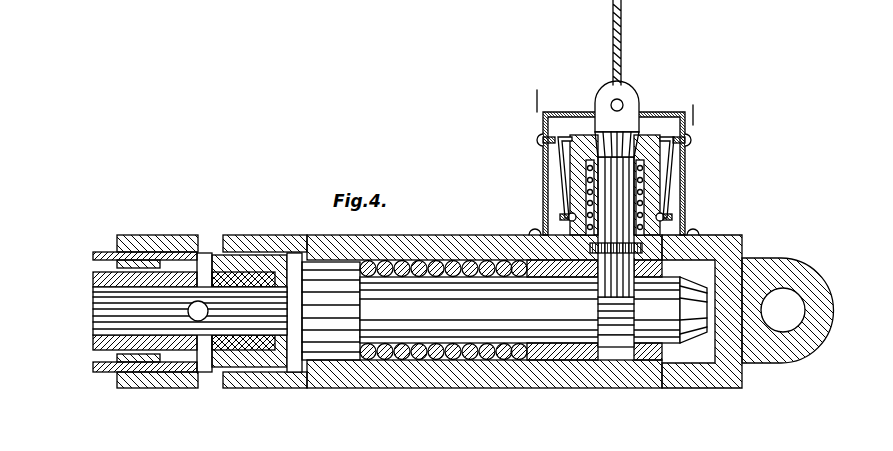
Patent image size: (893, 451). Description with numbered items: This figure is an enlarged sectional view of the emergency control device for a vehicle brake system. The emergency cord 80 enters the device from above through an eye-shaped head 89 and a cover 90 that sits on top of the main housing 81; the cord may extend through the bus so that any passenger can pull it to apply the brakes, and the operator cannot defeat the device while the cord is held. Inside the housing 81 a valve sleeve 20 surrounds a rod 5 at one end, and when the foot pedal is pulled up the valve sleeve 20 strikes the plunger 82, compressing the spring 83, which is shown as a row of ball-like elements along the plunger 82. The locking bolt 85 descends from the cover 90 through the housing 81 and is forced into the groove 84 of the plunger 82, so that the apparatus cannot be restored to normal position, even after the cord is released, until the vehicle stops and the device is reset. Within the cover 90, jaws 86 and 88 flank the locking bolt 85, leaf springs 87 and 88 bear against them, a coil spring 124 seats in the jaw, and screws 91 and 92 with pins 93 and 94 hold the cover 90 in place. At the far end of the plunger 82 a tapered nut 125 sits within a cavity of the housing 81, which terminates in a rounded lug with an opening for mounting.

The rod 5 is at (123, 372).
The valve sleeve 20 is at (95, 278).
The emergency cord 80 is at (621, 34).
The housing 81 is at (436, 384).
The plunger 82 is at (518, 344).
The spring 83 is at (432, 263).
The groove 84 is at (627, 334).
The locking bolt 85 is at (623, 272).
The jaw 86 is at (650, 206).
The leaf spring 87 is at (672, 171).
The leaf spring 88 is at (560, 164).
The eye head 89 is at (636, 122).
The cover 90 is at (563, 112).
The screw 91 is at (693, 140).
The screw 92 is at (536, 139).
The pin 93 is at (693, 112).
The pin 94 is at (537, 96).
The spring 124 is at (586, 186).
The nut 125 is at (698, 344).